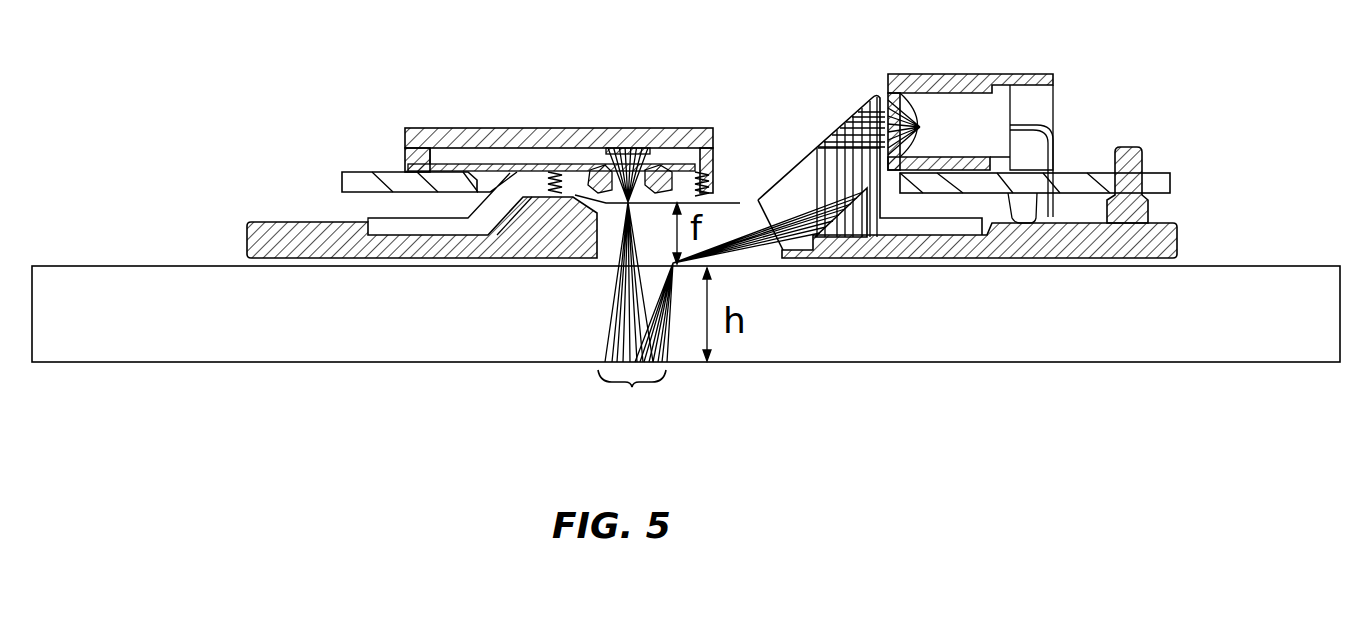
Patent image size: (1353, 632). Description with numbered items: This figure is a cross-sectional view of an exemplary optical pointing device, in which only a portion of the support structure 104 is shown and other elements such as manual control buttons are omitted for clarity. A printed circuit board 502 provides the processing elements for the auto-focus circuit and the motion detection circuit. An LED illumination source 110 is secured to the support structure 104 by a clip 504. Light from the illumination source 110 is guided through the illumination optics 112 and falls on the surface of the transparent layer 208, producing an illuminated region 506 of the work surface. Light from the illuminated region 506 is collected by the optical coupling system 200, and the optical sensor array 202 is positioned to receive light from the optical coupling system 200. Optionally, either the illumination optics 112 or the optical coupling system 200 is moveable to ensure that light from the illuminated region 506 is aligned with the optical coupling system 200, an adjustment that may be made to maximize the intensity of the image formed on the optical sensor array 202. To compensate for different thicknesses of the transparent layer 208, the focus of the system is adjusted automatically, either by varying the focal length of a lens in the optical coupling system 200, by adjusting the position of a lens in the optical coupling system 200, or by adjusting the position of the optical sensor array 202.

The support structure 104 is at (247, 240).
The LED illumination source 110 is at (932, 105).
The illumination optics 112 is at (790, 170).
The optical coupling system 200 is at (680, 200).
The optical sensor array 202 is at (544, 128).
The transparent layer 208 is at (135, 265).
The printed circuit board 502 is at (342, 182).
The clip 504 is at (1008, 74).
The illuminated region 506 is at (632, 397).